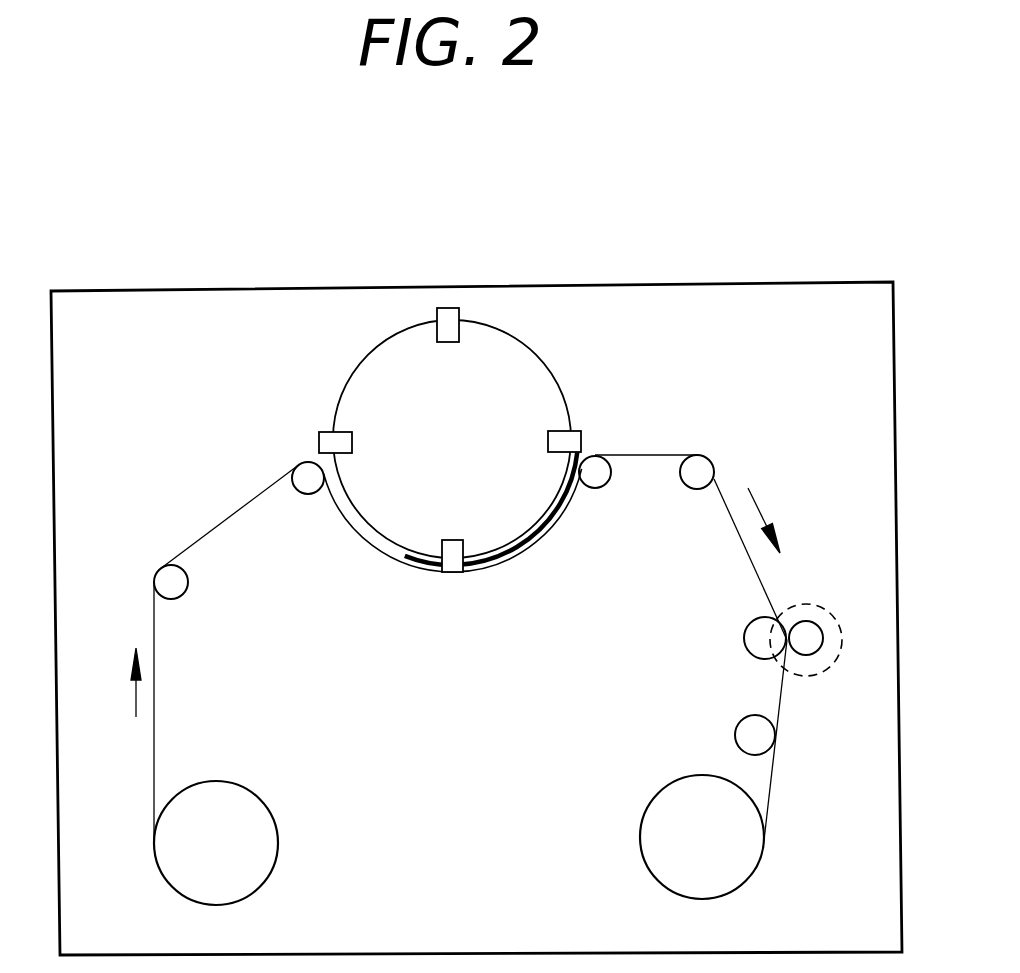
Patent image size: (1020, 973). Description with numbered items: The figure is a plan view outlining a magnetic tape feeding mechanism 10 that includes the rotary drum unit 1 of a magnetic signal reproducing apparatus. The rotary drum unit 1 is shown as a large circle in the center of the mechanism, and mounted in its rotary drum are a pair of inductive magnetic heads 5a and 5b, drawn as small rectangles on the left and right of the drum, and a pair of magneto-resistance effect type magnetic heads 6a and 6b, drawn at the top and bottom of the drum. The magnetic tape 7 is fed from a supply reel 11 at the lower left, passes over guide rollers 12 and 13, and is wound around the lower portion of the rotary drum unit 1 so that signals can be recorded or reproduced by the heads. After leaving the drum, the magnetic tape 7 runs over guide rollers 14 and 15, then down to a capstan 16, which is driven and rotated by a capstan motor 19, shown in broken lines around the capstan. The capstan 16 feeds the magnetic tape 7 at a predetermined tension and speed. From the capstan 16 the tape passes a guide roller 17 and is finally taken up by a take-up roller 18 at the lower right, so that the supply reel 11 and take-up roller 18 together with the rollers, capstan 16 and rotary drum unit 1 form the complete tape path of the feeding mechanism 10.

The rotary drum unit 1 is at (612, 345).
The magnetic tape feeding mechanism 10 is at (672, 260).
The inductive magnetic head 5a is at (563, 445).
The inductive magnetic head 5b is at (338, 443).
The magneto-resistance effect type magnetic head 6a is at (449, 322).
The magneto-resistance effect type magnetic head 6b is at (450, 562).
The magnetic tape 7 is at (660, 455).
The supply reel 11 is at (222, 800).
The guide roller 12 is at (173, 588).
The guide roller 13 is at (305, 483).
The guide roller 14 is at (598, 478).
The guide roller 15 is at (698, 478).
The capstan 16 is at (806, 640).
The guide roller 17 is at (745, 730).
The take-up roller 18 is at (752, 858).
The capstan motor 19 is at (811, 676).